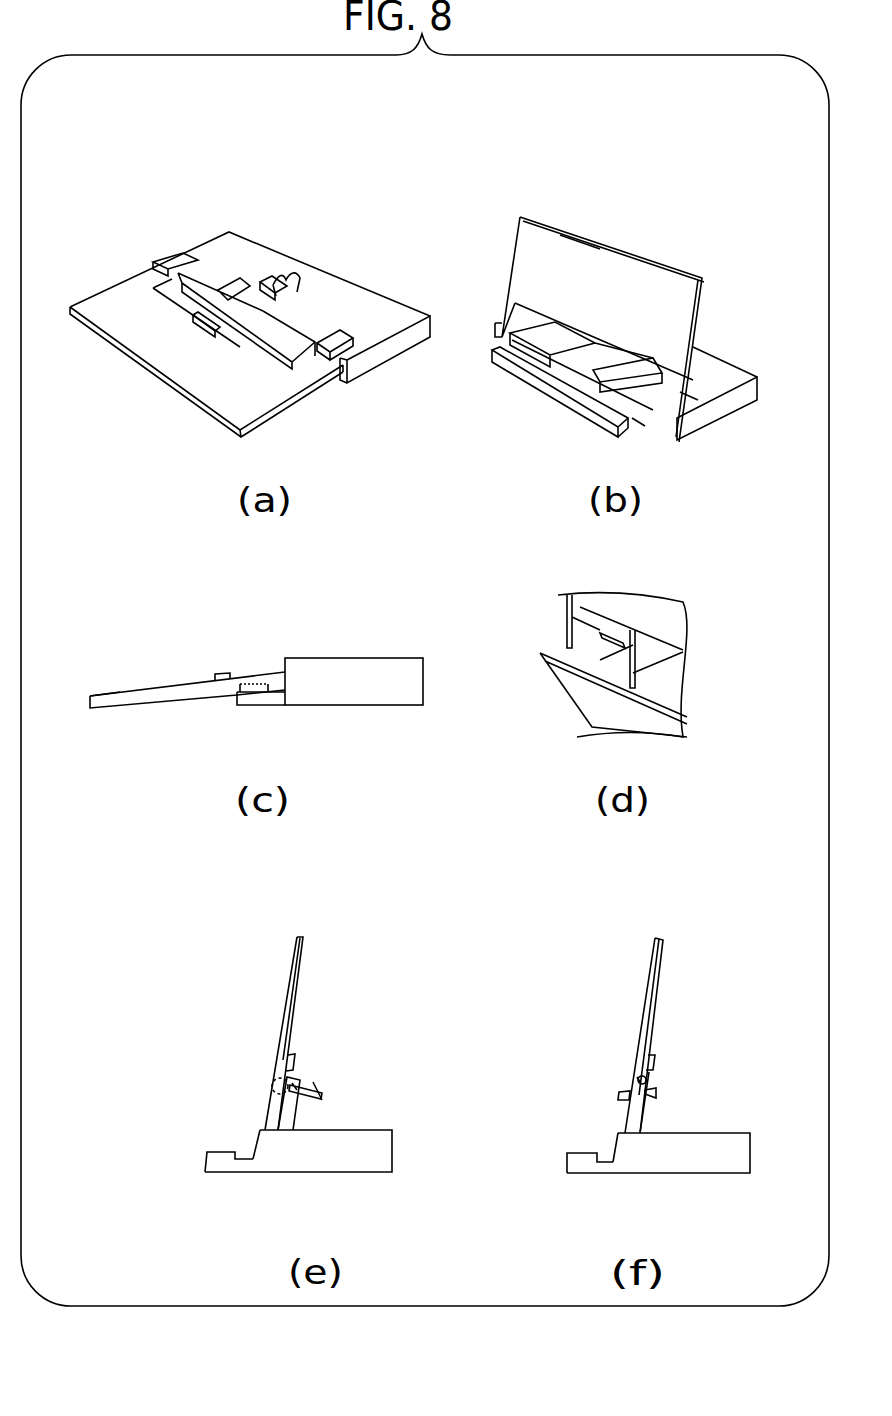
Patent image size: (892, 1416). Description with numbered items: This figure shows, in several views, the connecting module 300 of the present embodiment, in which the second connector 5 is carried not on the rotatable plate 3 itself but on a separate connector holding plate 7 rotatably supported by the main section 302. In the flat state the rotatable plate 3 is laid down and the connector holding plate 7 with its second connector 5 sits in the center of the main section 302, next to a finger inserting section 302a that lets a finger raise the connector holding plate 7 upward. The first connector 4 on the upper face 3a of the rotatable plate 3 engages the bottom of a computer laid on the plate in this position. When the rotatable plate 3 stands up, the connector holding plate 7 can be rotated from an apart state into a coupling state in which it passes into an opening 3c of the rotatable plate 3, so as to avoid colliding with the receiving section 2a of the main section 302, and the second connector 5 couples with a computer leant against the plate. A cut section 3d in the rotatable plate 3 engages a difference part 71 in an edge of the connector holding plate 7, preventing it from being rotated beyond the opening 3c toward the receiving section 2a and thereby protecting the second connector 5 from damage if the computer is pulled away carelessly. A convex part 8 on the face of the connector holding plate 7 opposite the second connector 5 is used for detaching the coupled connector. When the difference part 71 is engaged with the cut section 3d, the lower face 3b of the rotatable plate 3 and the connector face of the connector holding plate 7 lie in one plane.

The connecting module 300 is at (263, 157).
The rotatable plate 3 is at (90, 289).
The upper face of the rotatable plate 3a is at (268, 394).
The lower face of the rotatable plate 3b is at (532, 240).
The opening 3c is at (633, 373).
The cut section 3d is at (280, 1100).
The first connector 4 is at (200, 337).
The second connector 5 is at (257, 278).
The connector holding plate 7 is at (243, 297).
The difference part 71 is at (292, 1086).
The convex part 8 is at (325, 1093).
The receiving section 2a is at (632, 418).
The main section 302 is at (313, 247).
The finger inserting section 302a is at (277, 270).